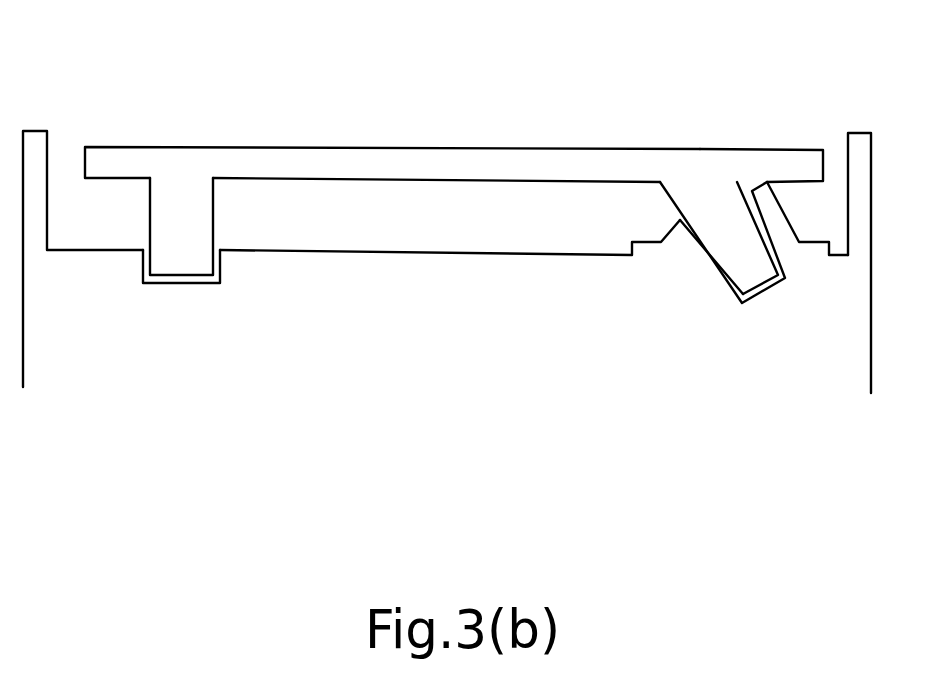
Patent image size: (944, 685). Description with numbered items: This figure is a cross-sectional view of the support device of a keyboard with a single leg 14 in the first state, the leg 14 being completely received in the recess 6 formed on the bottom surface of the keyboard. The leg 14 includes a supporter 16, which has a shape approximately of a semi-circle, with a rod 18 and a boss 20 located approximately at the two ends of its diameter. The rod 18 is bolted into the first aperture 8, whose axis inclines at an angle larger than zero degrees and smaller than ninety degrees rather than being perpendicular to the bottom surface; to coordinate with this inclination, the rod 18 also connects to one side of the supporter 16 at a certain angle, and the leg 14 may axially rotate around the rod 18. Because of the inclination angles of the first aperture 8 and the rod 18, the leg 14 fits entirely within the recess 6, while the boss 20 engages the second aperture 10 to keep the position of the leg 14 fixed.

The recess 6 is at (428, 253).
The first aperture 8 is at (762, 297).
The second aperture 10 is at (180, 283).
The leg 14 is at (782, 148).
The supporter 16 is at (489, 158).
The rod 18 is at (733, 245).
The boss 20 is at (172, 222).